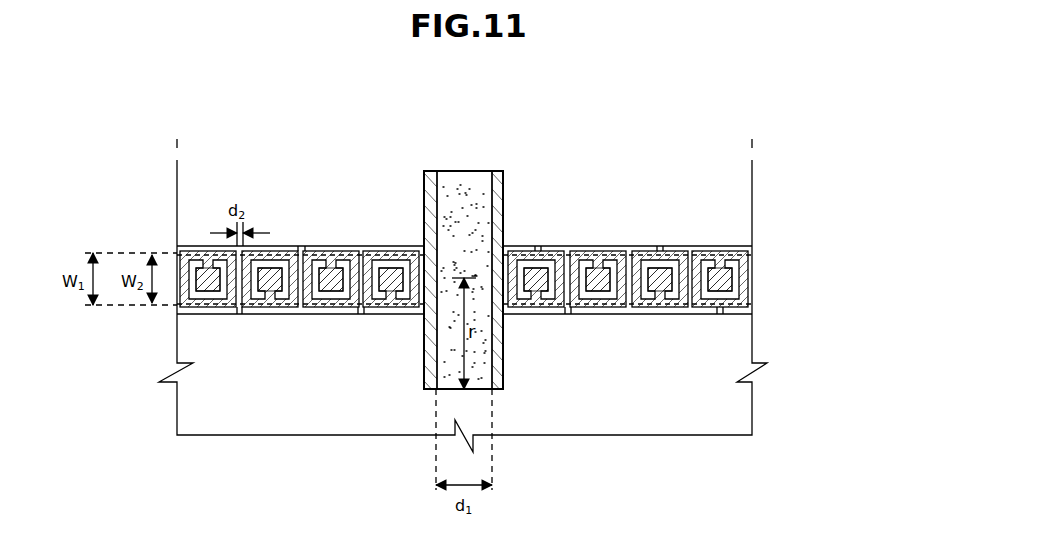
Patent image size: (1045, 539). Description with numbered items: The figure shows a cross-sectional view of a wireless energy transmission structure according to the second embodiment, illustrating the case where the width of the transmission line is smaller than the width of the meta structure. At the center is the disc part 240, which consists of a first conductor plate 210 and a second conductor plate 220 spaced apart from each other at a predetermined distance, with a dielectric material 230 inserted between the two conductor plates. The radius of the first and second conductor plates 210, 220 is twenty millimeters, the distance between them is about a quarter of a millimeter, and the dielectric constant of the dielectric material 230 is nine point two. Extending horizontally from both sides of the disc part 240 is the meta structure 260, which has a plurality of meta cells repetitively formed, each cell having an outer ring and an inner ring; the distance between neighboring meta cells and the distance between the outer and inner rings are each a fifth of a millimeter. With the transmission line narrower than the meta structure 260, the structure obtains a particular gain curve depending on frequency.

The first conductor plate 210 is at (431, 173).
The second conductor plate 220 is at (498, 173).
The dielectric material 230 is at (467, 179).
The disc part 240 is at (468, 240).
The meta structure 260 is at (752, 276).